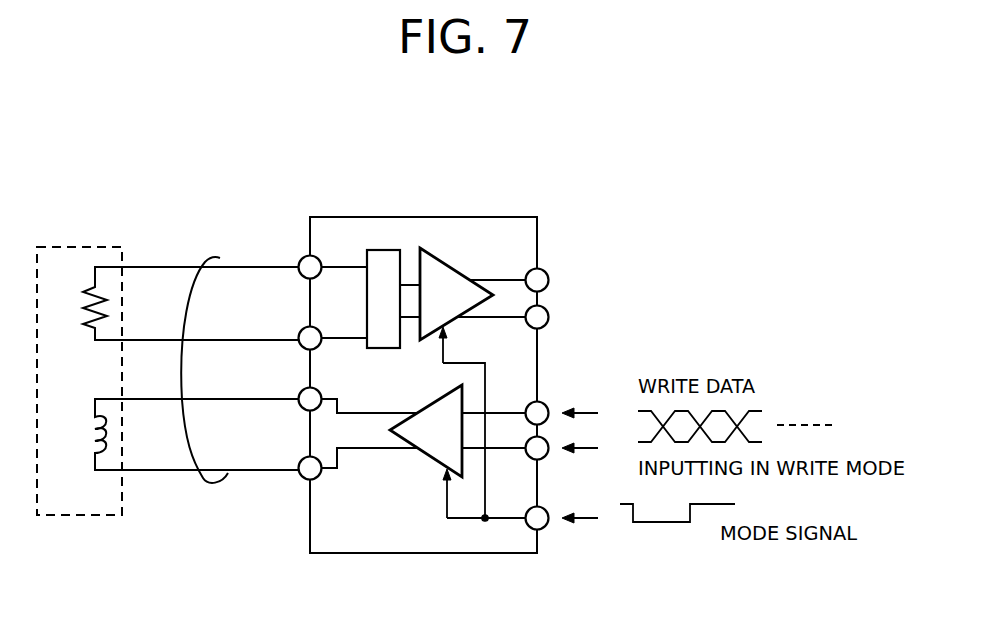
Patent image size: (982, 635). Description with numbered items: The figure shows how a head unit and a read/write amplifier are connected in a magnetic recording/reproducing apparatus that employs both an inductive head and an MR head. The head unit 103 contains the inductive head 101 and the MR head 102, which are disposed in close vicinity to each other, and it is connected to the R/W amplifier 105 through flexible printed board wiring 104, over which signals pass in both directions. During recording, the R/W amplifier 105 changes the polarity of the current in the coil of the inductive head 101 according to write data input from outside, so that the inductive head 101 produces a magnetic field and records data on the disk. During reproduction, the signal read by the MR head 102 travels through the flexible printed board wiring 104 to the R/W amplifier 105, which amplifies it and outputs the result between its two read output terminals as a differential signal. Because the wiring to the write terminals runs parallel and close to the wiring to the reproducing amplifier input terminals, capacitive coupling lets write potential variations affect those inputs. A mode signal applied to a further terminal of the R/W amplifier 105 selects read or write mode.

The inductive head 101 is at (78, 431).
The MR head 102 is at (77, 306).
The head unit 103 is at (86, 245).
The flexible printed board wiring 104 is at (205, 485).
The R/W amplifier 105 is at (393, 226).